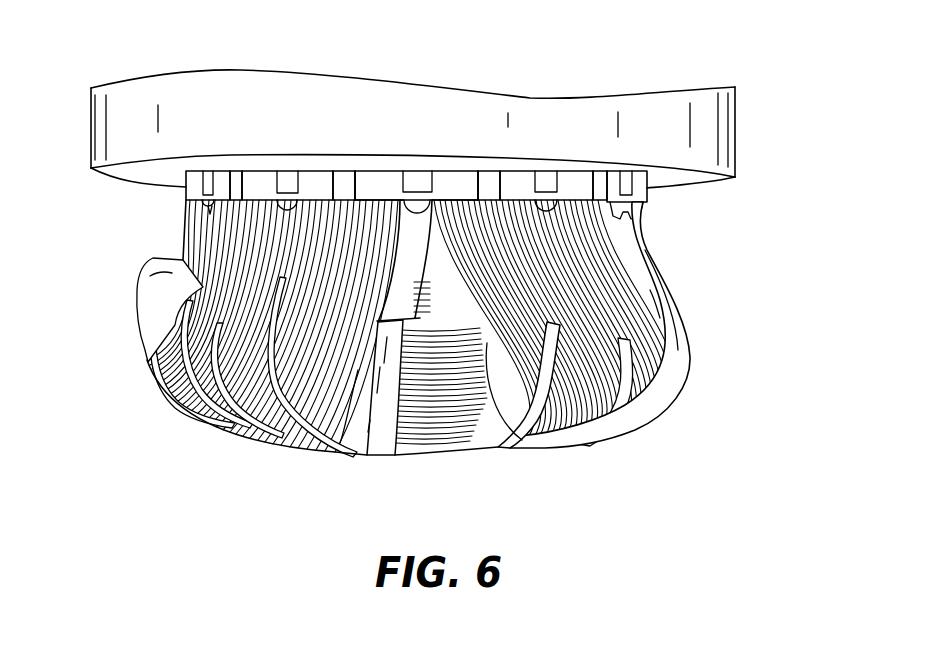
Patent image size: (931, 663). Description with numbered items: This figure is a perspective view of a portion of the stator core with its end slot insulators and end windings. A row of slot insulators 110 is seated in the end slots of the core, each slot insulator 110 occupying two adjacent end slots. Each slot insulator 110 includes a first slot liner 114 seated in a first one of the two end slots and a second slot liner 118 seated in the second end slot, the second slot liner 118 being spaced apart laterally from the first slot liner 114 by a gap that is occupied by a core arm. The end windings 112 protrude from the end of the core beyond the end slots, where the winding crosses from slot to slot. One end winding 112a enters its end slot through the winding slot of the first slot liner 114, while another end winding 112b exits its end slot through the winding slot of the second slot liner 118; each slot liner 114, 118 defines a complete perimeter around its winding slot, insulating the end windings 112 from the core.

The slot insulator 110 is at (220, 185).
The end windings 112 is at (685, 390).
The end winding 112a is at (340, 443).
The end winding 112b is at (522, 440).
The first slot liner 114 is at (387, 177).
The second slot liner 118 is at (449, 183).